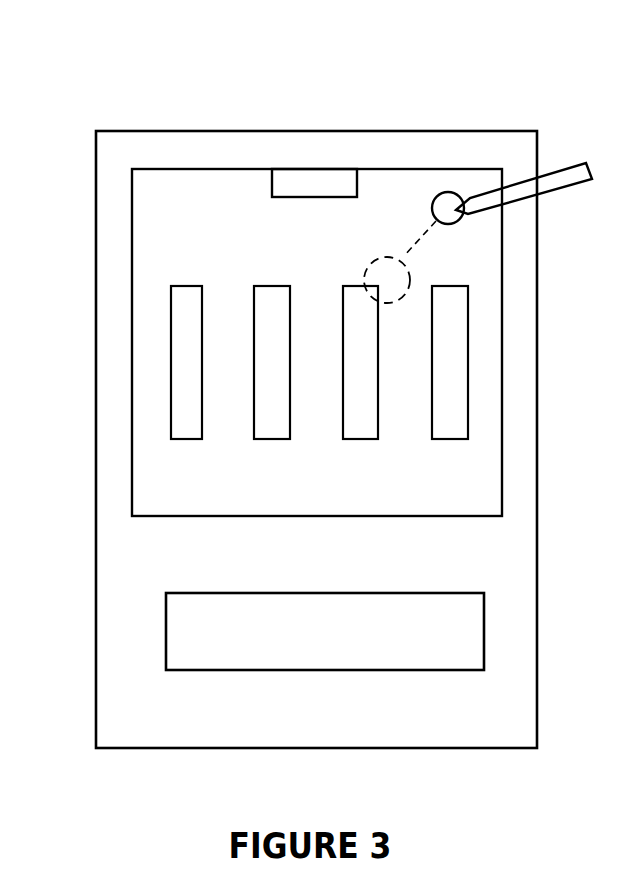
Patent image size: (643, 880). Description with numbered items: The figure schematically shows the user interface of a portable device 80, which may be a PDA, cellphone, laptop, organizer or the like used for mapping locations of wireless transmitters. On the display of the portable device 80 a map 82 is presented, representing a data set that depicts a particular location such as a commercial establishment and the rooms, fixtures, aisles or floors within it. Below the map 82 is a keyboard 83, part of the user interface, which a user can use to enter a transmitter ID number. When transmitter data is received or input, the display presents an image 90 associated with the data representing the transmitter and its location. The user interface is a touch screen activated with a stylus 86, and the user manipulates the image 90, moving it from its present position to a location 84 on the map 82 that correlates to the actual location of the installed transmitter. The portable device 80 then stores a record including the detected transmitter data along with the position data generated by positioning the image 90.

The portable device 80 is at (213, 111).
The map 82 is at (128, 217).
The keyboard 83 is at (512, 627).
The location 84 is at (475, 270).
The stylus 86 is at (562, 163).
The image 90 is at (477, 162).